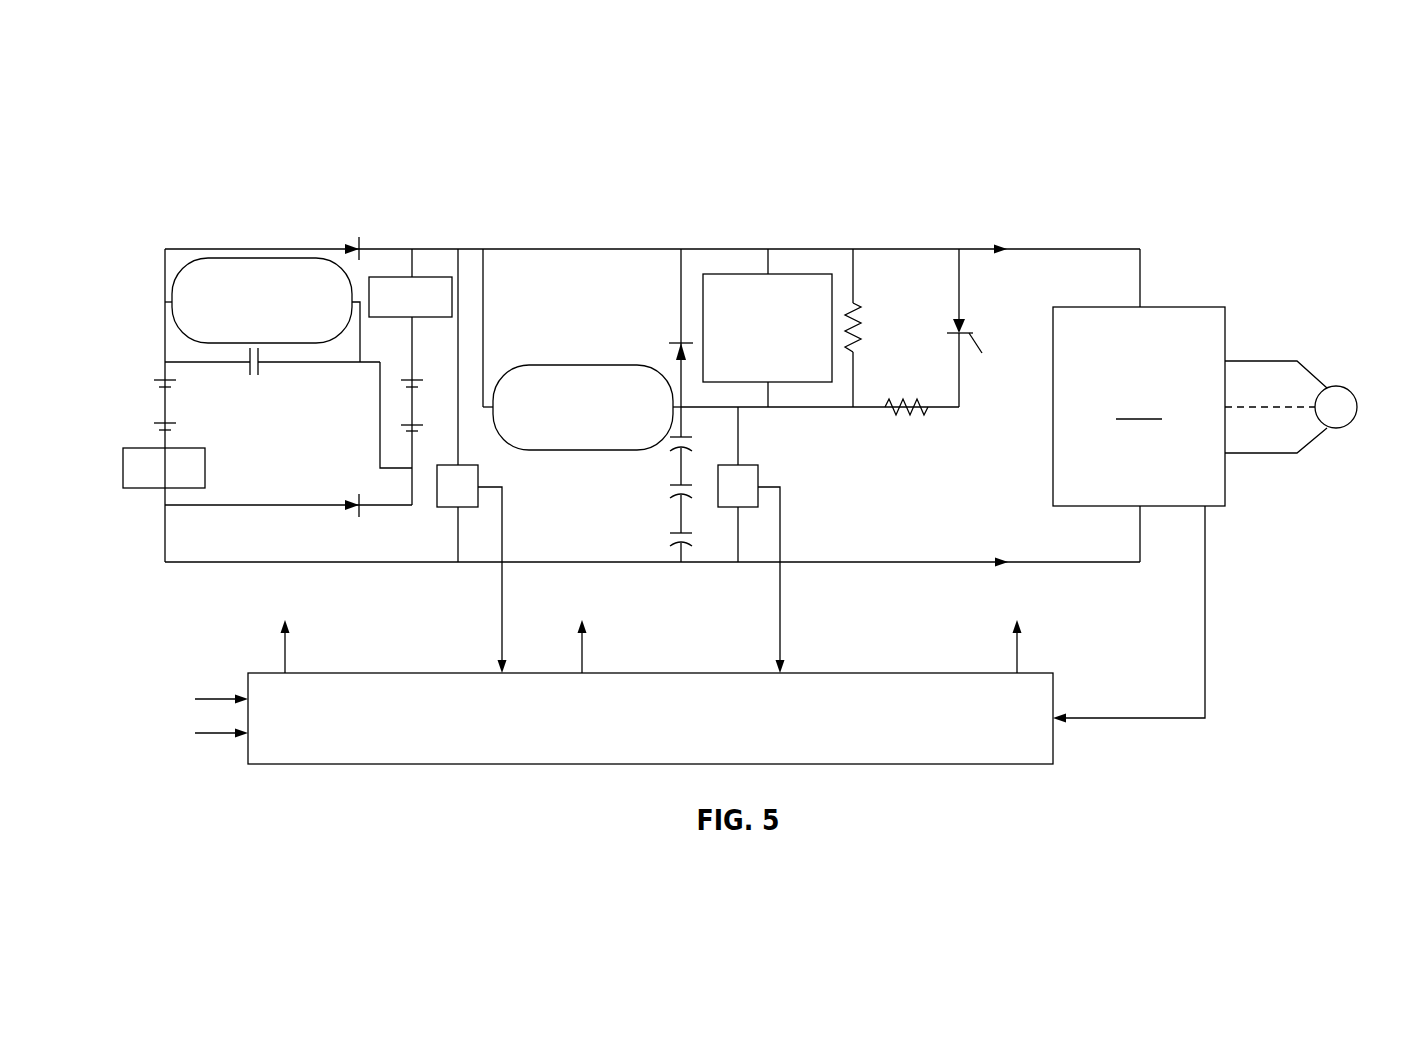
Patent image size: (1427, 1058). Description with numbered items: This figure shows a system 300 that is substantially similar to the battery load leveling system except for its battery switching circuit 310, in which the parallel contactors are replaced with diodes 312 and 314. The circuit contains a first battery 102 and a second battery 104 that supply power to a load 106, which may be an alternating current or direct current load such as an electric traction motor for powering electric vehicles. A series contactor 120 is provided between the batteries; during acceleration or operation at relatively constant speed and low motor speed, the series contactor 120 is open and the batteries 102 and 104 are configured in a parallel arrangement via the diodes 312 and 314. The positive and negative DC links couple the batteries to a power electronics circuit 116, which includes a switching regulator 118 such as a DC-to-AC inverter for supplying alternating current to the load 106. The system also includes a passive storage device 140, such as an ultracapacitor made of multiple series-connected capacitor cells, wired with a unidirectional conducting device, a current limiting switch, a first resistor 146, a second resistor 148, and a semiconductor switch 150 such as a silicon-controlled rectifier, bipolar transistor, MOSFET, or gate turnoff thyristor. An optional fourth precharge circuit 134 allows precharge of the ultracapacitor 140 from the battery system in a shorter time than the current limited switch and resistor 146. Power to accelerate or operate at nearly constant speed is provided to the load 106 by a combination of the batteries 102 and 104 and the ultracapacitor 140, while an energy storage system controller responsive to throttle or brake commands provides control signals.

The system 300 is at (1012, 208).
The battery switching circuit 310 is at (437, 208).
The diode 312 is at (356, 237).
The diode 314 is at (357, 515).
The first battery 102 is at (139, 407).
The second battery 104 is at (389, 405).
The series contactor 120 is at (264, 371).
The fourth precharge circuit 134 is at (580, 365).
The passive storage device 140 is at (659, 464).
The first resistor 146 is at (867, 326).
The second resistor 148 is at (908, 418).
The semiconductor switch 150 is at (972, 332).
The power electronics circuit 116 is at (1227, 335).
The switching regulator 118 is at (1139, 406).
The load 106 is at (1346, 387).